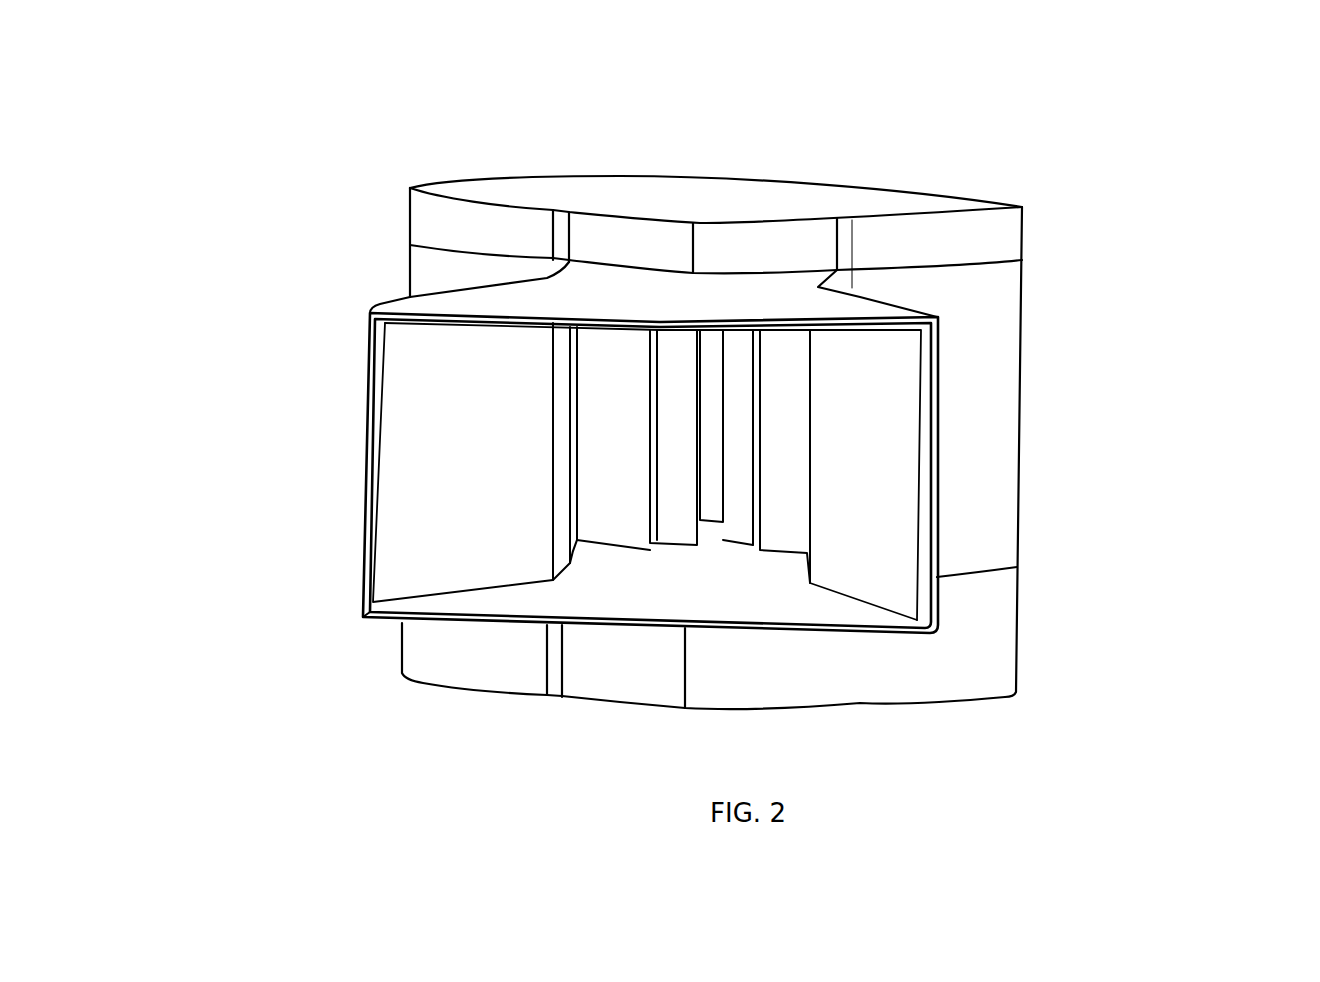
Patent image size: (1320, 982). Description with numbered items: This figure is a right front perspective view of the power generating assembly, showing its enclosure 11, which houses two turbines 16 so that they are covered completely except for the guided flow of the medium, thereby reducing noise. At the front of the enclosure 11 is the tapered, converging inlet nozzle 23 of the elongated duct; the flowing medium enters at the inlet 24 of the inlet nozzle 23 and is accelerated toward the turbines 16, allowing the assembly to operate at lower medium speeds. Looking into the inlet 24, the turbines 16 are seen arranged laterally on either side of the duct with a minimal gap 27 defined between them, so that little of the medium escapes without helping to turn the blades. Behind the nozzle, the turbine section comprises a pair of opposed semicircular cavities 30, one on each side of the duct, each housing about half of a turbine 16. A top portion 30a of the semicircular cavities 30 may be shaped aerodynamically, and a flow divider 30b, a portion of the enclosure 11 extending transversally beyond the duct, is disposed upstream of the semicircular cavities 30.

The enclosure 11 is at (955, 630).
The turbines 16 is at (640, 497).
The inlet nozzle 23 is at (368, 360).
The inlet 24 is at (370, 603).
The gap 27 is at (717, 415).
The semicircular cavities 30 is at (420, 282).
The top portion 30a is at (912, 250).
The flow divider 30b is at (698, 242).